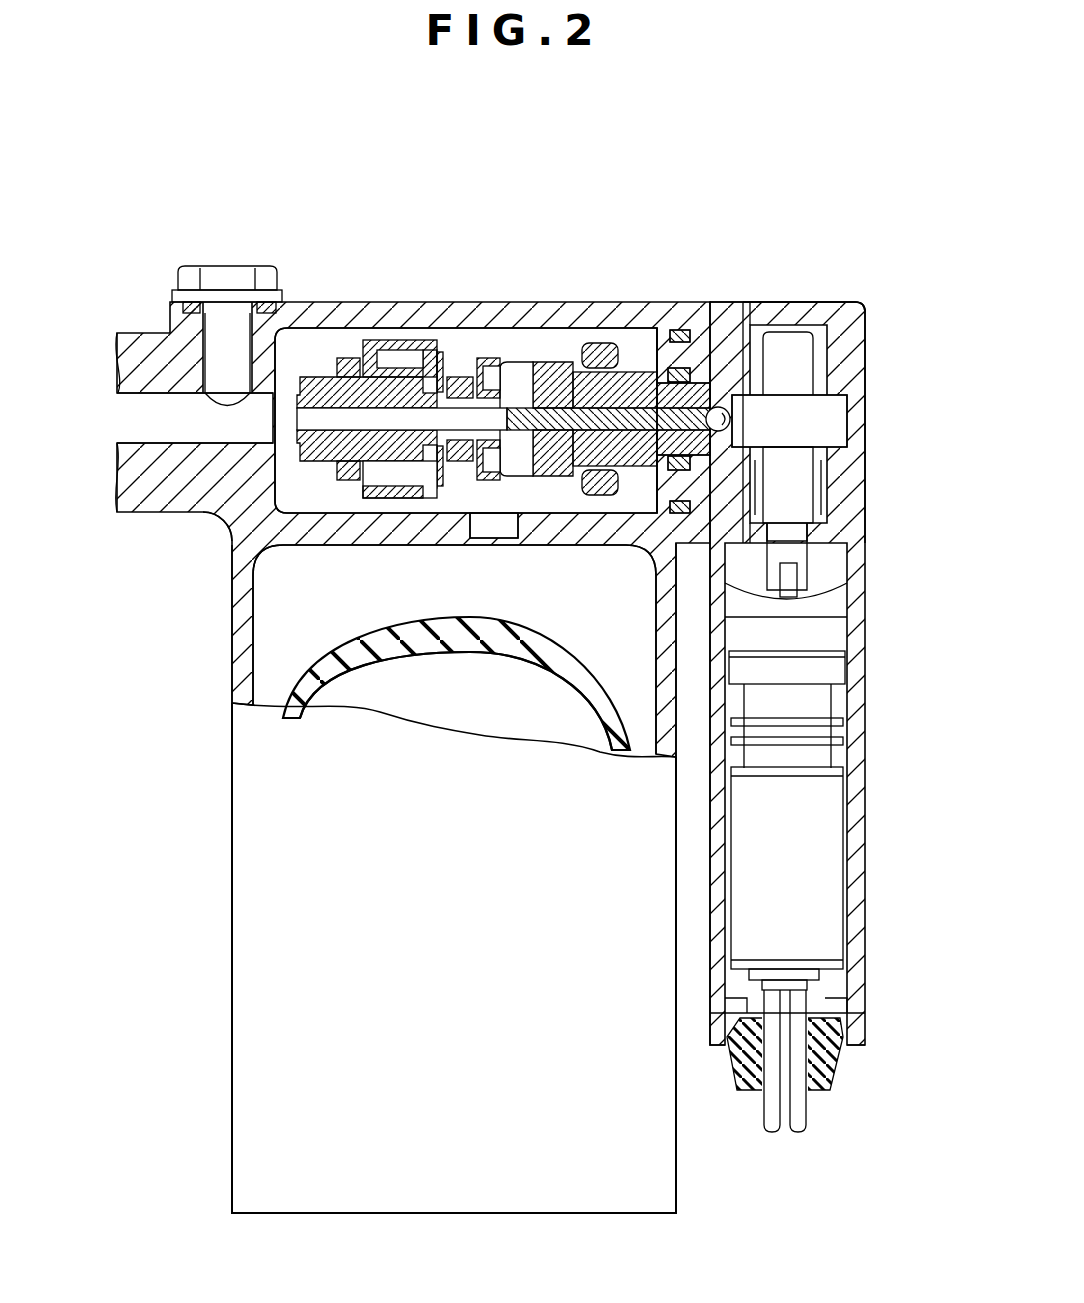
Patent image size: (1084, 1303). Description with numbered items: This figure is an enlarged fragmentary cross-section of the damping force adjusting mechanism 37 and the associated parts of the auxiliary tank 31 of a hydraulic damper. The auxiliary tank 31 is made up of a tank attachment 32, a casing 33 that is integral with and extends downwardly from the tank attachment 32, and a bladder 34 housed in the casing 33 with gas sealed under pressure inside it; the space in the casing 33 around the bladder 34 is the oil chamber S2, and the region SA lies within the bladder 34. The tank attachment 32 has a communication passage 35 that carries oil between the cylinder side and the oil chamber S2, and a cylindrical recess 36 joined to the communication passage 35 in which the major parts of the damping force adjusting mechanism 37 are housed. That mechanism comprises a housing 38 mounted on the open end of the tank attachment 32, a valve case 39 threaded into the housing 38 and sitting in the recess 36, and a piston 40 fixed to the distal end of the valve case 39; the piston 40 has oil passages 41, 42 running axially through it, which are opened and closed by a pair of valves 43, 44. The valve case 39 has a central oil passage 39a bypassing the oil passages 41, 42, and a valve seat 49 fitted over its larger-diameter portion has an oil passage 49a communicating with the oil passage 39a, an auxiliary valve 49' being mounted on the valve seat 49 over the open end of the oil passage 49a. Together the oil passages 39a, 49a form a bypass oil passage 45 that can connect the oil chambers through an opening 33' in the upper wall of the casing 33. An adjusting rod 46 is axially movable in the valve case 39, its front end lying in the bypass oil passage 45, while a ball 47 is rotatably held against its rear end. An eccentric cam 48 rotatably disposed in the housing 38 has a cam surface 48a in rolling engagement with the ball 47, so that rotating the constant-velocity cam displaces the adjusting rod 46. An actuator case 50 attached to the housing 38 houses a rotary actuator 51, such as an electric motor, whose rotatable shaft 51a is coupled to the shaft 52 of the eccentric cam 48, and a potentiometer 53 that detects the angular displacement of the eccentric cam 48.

The auxiliary tank 31 is at (232, 1052).
The tank attachment 32 is at (355, 302).
The casing 33 is at (405, 650).
The opening 33' is at (518, 555).
The bladder 34 is at (577, 655).
The communication passage 35 is at (130, 418).
The cylindrical recess 36 is at (300, 338).
The damping force adjusting mechanism 37 is at (822, 192).
The housing 38 is at (727, 302).
The valve case 39 is at (628, 362).
The oil passage 39a is at (205, 515).
The piston 40 is at (398, 350).
The oil passage 41 is at (437, 348).
The oil passage 42 is at (400, 480).
The valve 43 is at (450, 375).
The valve 44 is at (372, 472).
The bypass oil passage 45 is at (465, 445).
The adjusting rod 46 is at (665, 375).
The ball 47 is at (757, 330).
The eccentric cam 48 is at (795, 432).
The cam surface 48a is at (797, 392).
The valve seat 49 is at (574, 366).
The auxiliary valve 49' is at (510, 341).
The oil passage 49a is at (552, 370).
The actuator case 50 is at (852, 850).
The rotary actuator 51 is at (805, 910).
The rotatable shaft 51a is at (790, 578).
The shaft 52 is at (790, 490).
The potentiometer 53 is at (822, 605).
The oil chamber S2 is at (280, 600).
The space SA is at (460, 718).